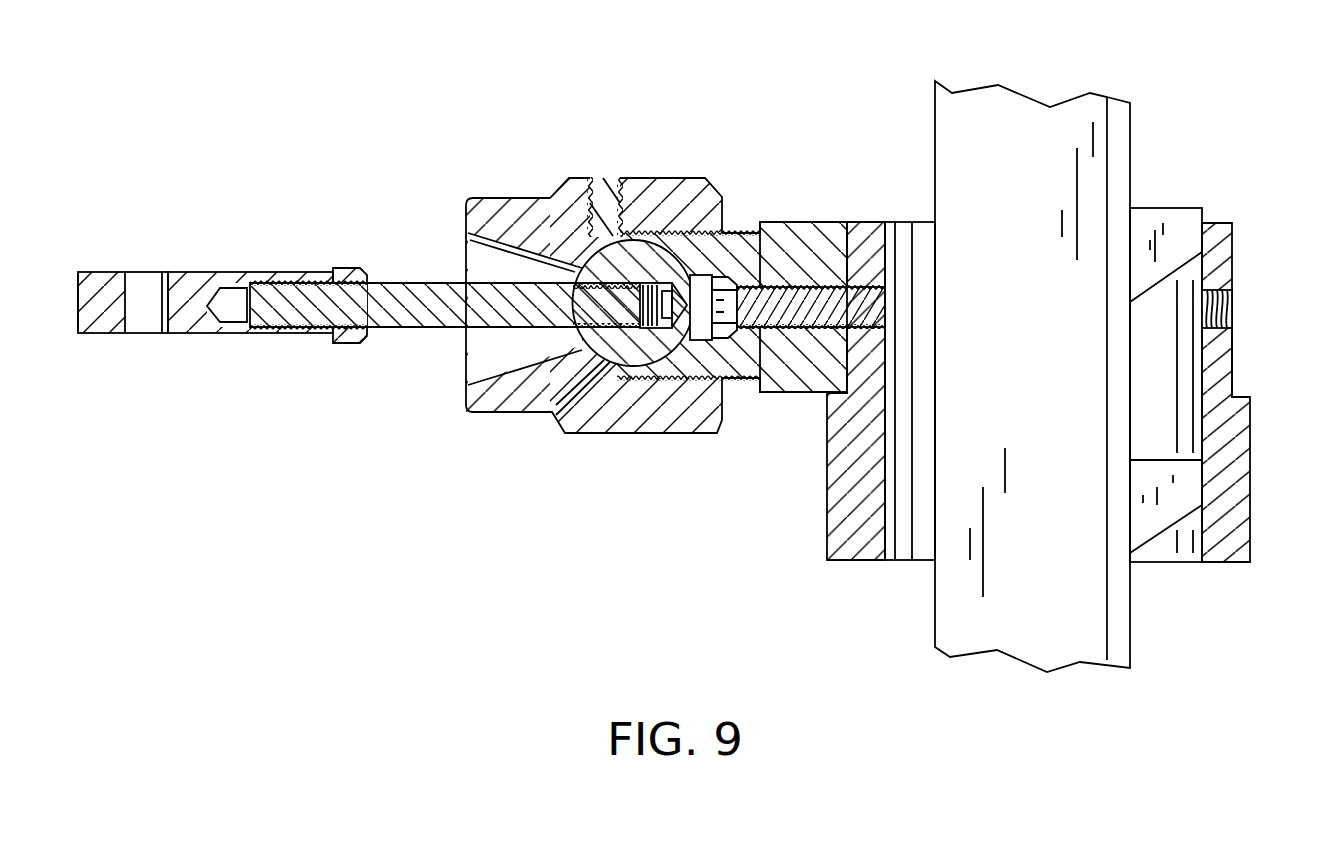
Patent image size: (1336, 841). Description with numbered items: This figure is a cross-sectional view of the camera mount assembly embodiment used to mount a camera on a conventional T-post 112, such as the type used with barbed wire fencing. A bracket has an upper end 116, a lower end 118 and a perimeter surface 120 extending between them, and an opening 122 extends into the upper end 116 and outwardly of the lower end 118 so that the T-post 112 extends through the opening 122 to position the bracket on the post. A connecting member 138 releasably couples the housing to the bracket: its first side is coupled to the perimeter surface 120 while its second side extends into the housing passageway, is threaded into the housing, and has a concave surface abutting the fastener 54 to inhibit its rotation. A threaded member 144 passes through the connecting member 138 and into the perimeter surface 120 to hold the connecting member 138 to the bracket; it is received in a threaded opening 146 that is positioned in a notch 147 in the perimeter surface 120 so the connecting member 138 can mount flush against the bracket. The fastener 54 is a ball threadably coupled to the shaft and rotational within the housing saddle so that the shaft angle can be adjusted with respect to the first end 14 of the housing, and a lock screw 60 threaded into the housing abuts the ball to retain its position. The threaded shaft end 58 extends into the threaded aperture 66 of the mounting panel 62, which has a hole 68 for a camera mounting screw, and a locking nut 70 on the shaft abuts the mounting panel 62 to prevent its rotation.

The first end 14 is at (452, 412).
The fastener 54 is at (553, 432).
The shaft end 58 is at (232, 335).
The lock screw 60 is at (613, 177).
The mounting panel 62 is at (85, 335).
The threaded aperture 66 is at (302, 272).
The hole 68 is at (148, 272).
The locking nut 70 is at (352, 343).
The T-post 112 is at (975, 655).
The upper end 116 is at (1172, 208).
The lower end 118 is at (1212, 562).
The perimeter surface 120 is at (1252, 530).
The opening 122 is at (895, 585).
The connecting member 138 is at (762, 222).
The threaded member 144 is at (782, 393).
The threaded opening 146 is at (1233, 307).
The notch 147 is at (1233, 372).